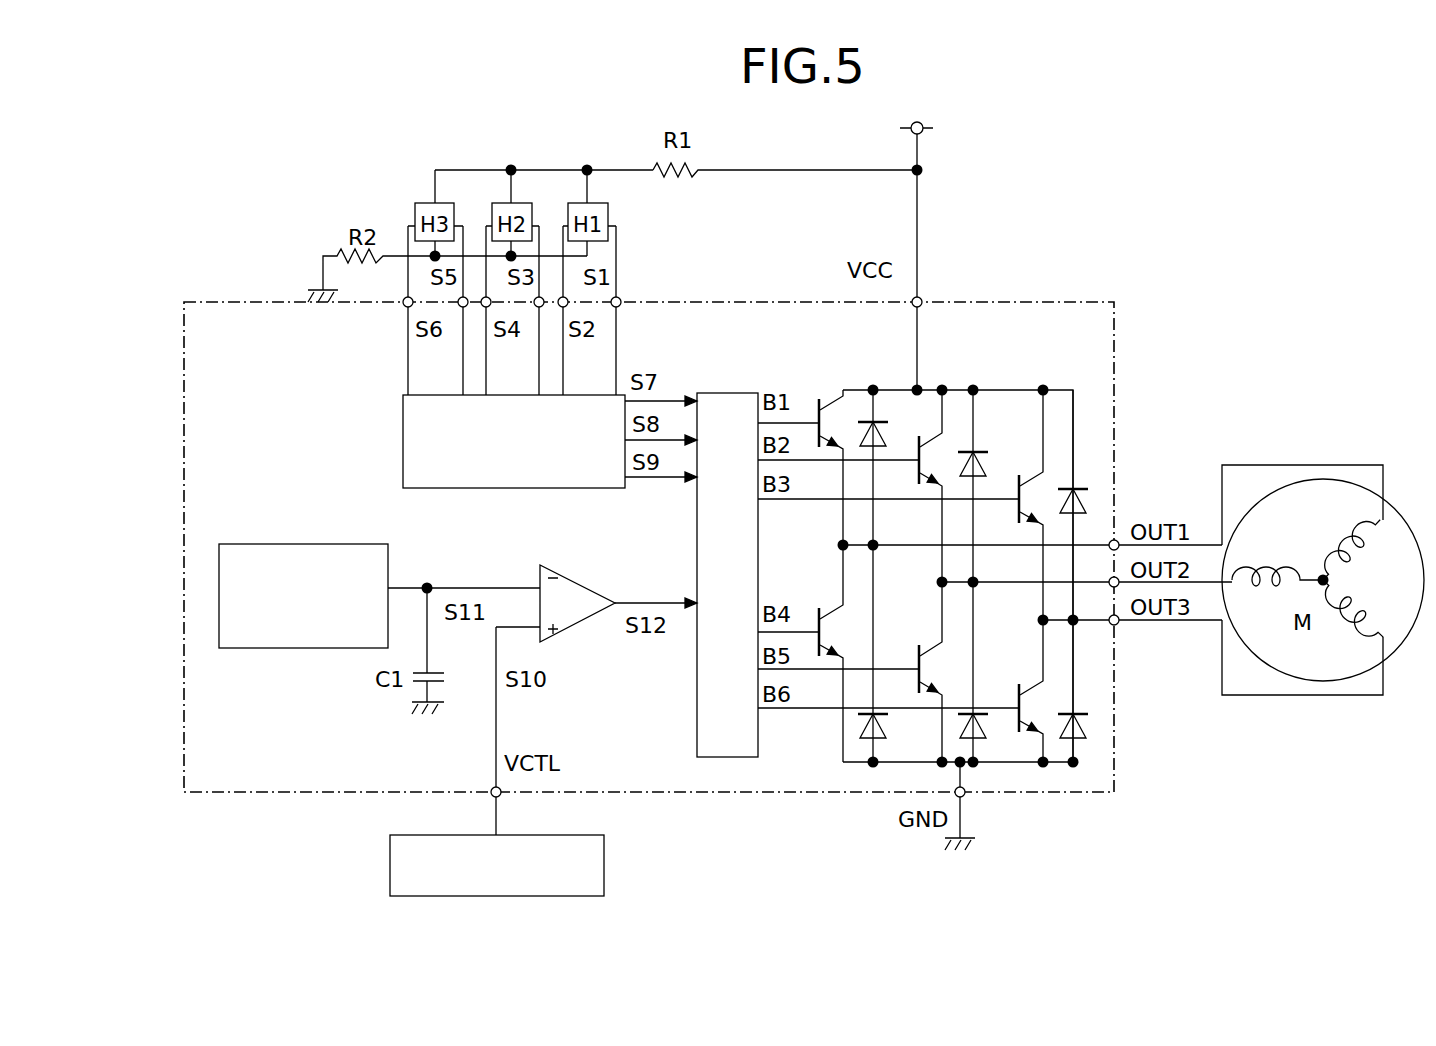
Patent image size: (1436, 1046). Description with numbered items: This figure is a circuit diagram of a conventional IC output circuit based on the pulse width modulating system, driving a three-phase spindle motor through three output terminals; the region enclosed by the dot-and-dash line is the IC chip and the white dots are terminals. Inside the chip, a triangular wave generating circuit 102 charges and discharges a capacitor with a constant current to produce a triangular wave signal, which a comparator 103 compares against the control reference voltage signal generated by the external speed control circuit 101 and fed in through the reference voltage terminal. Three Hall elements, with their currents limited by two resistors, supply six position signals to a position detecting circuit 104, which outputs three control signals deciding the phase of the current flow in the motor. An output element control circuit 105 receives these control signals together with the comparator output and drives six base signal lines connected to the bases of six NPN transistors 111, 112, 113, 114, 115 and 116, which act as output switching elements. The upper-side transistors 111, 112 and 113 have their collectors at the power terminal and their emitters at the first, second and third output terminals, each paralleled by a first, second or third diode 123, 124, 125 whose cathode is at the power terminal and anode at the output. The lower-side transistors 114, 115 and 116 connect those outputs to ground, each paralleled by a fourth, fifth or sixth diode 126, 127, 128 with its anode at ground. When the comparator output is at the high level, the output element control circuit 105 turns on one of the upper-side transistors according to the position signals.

The speed control circuit 101 is at (558, 844).
The triangular wave generating circuit 102 is at (353, 544).
The comparator 103 is at (583, 589).
The position detecting circuit 104 is at (476, 488).
The output element control circuit 105 is at (723, 393).
The first NPN transistor 111 is at (826, 392).
The second NPN transistor 112 is at (919, 482).
The third NPN transistor 113 is at (1043, 490).
The fourth NPN transistor 114 is at (838, 606).
The fifth NPN transistor 115 is at (942, 656).
The sixth NPN transistor 116 is at (1043, 694).
The first diode 123 is at (873, 422).
The second diode 124 is at (973, 452).
The third diode 125 is at (1073, 490).
The fourth diode 126 is at (873, 745).
The fifth diode 127 is at (973, 744).
The sixth diode 128 is at (1073, 735).